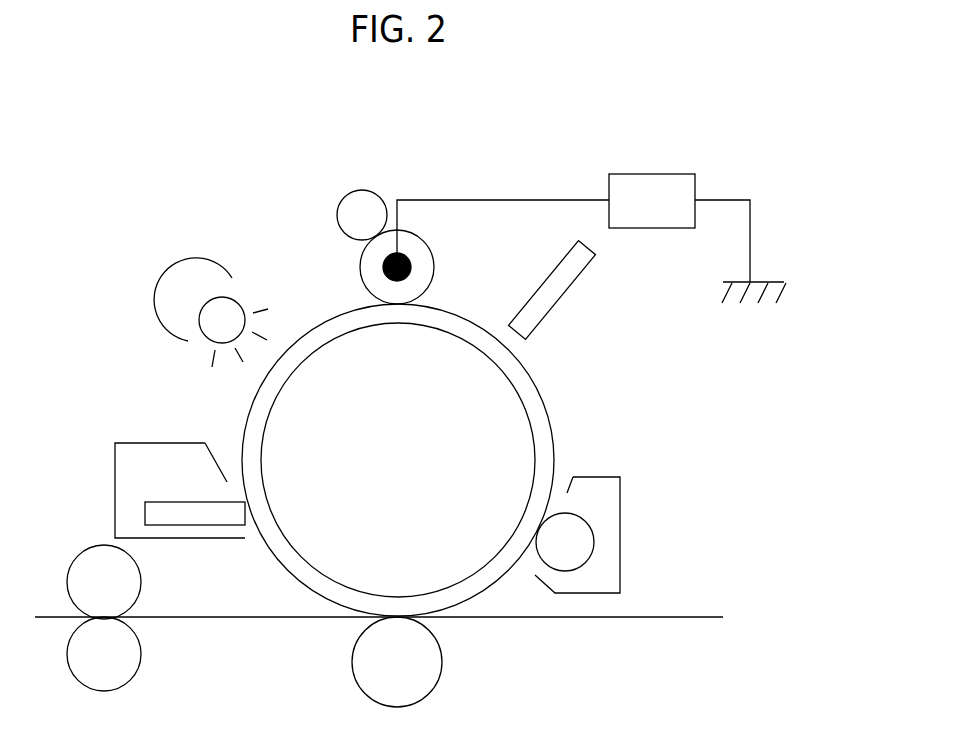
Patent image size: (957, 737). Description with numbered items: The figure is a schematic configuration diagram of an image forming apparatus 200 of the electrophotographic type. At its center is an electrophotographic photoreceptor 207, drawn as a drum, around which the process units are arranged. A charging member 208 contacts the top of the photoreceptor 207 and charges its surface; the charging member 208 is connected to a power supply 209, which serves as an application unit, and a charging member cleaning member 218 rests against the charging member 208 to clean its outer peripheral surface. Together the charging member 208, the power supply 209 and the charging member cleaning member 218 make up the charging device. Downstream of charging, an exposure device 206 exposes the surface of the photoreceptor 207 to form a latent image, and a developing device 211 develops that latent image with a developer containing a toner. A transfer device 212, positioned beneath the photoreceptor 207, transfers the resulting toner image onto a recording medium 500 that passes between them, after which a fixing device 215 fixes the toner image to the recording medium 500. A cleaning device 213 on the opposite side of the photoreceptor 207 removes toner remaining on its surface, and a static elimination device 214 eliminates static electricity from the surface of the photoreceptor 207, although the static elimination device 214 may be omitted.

The image forming apparatus 200 is at (476, 145).
The exposure device 206 is at (562, 297).
The electrophotographic photoreceptor 207 is at (553, 410).
The charging member 208 is at (363, 248).
The power supply 209 is at (670, 173).
The developing device 211 is at (621, 510).
The transfer device 212 is at (443, 663).
The cleaning device 213 is at (162, 442).
The static elimination device 214 is at (188, 296).
The fixing device 215 is at (142, 654).
The charging member cleaning member 218 is at (337, 216).
The recording medium 500 is at (648, 619).